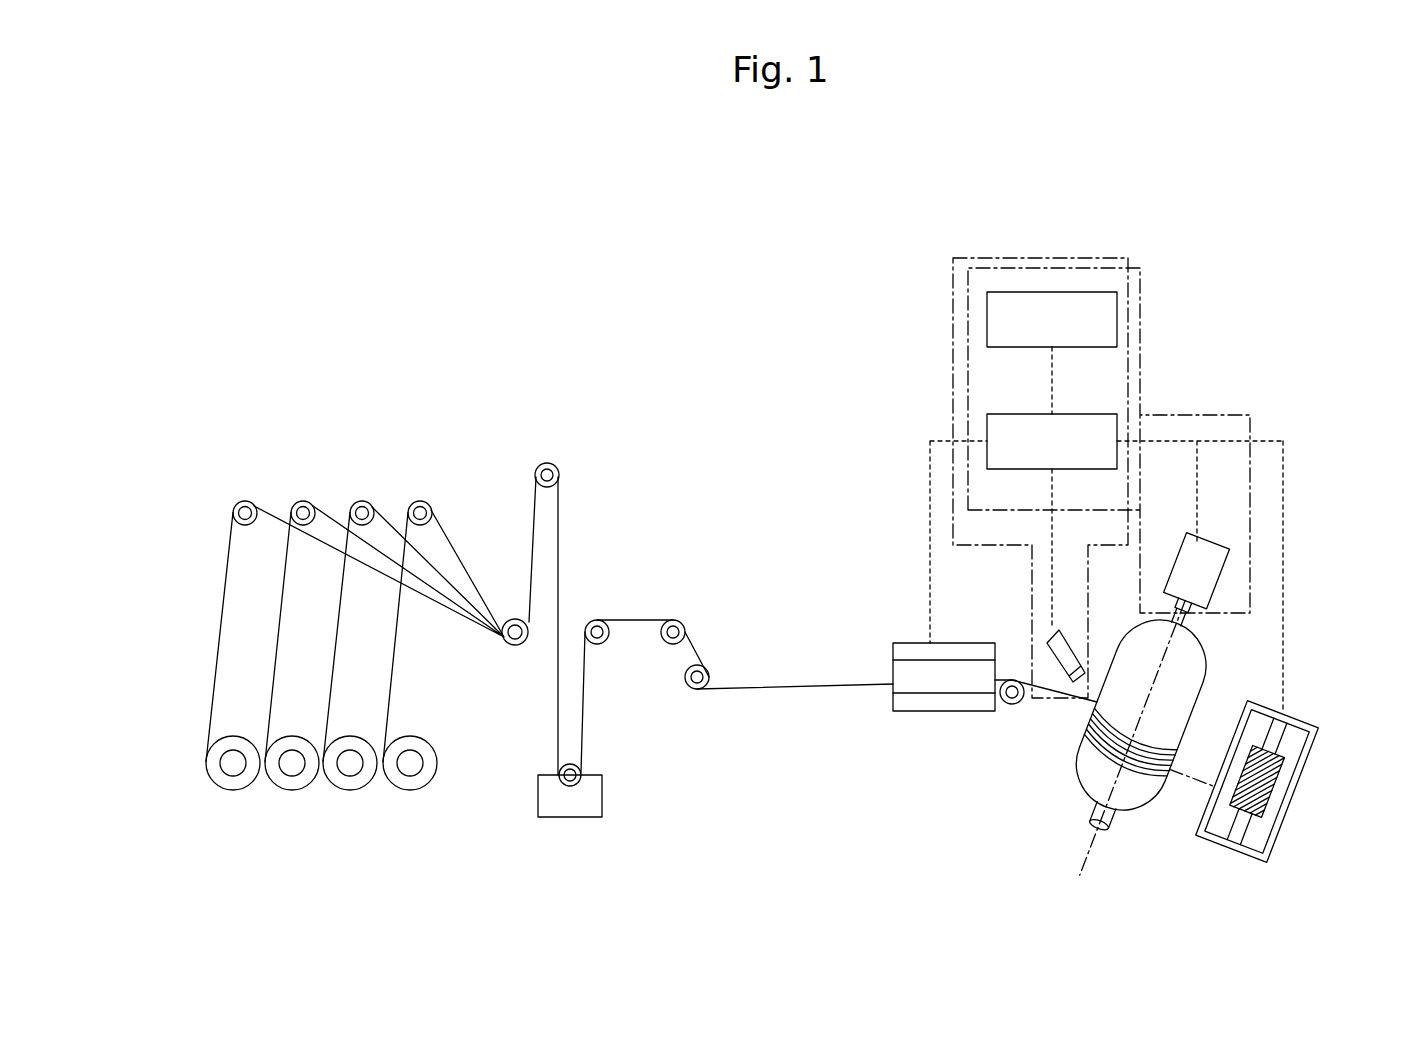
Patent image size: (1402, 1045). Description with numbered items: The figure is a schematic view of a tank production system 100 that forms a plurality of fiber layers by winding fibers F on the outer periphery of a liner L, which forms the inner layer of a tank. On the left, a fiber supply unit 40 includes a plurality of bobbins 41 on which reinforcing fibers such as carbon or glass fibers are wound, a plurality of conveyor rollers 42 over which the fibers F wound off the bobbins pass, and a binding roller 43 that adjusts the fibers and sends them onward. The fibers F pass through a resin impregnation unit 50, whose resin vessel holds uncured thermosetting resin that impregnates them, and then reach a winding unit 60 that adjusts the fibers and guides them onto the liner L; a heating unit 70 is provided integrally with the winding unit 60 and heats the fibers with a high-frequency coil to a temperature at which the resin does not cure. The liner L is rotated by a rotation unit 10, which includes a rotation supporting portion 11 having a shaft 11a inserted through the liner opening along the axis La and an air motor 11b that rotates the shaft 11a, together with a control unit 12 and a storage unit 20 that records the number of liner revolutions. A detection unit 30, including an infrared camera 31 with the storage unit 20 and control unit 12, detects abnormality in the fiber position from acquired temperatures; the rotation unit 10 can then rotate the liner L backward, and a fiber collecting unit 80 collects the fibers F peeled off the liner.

The tank production system 100 is at (1220, 222).
The rotation unit 10 is at (1233, 415).
The rotation supporting portion 11 is at (1223, 587).
The shaft 11a is at (1187, 610).
The air motor 11b is at (1208, 547).
The control unit 12 is at (1117, 430).
The storage unit 20 is at (1117, 312).
The detection unit 30 is at (953, 295).
The infrared camera 31 is at (1066, 630).
The fiber supply unit 40 is at (278, 410).
The bobbin 41 is at (423, 792).
The conveyor roller 42 is at (413, 501).
The binding roller 43 is at (523, 647).
The resin impregnation unit 50 is at (602, 795).
The winding unit 60 is at (893, 669).
The heating unit 70 is at (972, 650).
The fiber collecting unit 80 is at (1280, 819).
The fibers F is at (635, 618).
The liner L is at (1205, 673).
The axis La is at (1119, 749).